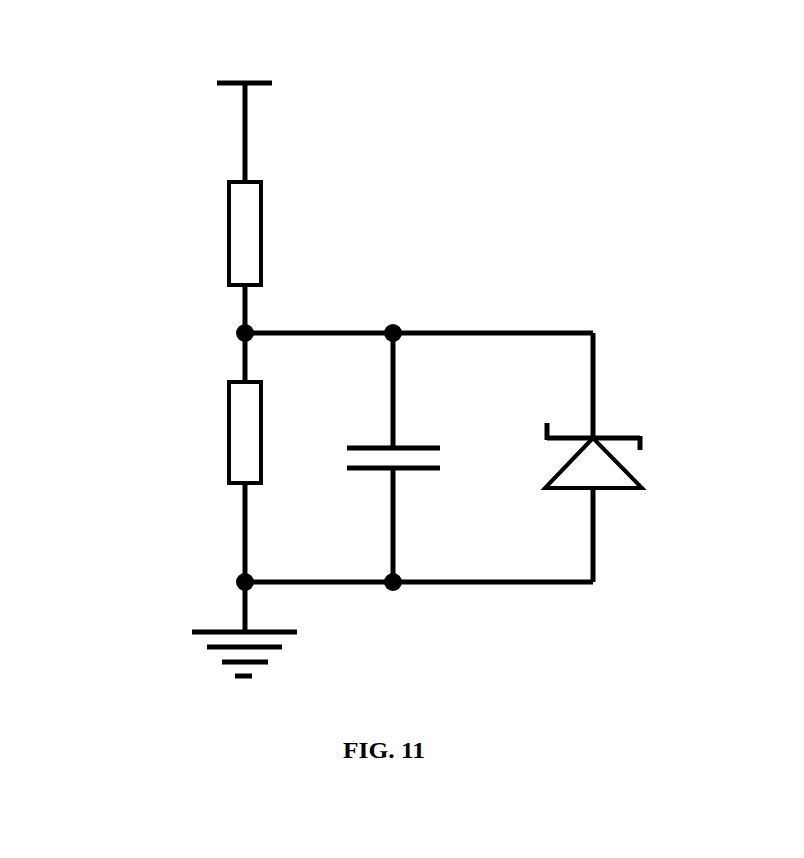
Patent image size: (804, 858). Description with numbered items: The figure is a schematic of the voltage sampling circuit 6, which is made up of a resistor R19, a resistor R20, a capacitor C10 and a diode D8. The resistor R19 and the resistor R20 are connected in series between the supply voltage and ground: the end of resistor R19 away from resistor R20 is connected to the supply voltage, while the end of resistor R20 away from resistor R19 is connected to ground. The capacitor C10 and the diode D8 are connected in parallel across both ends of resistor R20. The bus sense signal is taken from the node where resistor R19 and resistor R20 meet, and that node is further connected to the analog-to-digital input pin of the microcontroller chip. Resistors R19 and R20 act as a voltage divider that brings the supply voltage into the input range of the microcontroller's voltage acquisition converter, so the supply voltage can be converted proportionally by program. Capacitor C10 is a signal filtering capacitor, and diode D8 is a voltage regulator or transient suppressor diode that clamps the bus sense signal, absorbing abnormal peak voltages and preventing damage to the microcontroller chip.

The voltage sampling circuit 6 is at (170, 163).
The resistor R19 is at (203, 233).
The resistor R20 is at (203, 432).
The capacitor C10 is at (432, 457).
The diode D8 is at (642, 455).